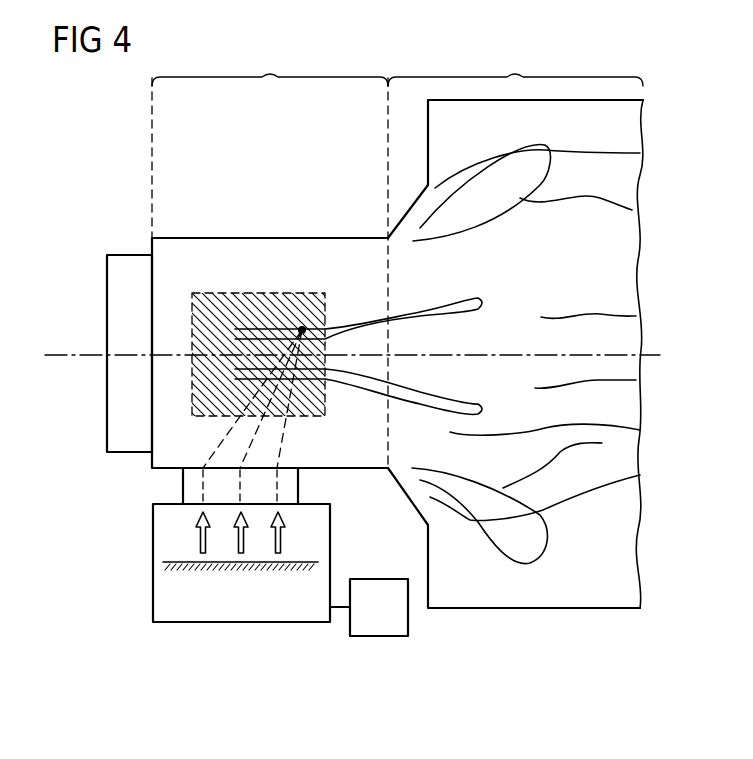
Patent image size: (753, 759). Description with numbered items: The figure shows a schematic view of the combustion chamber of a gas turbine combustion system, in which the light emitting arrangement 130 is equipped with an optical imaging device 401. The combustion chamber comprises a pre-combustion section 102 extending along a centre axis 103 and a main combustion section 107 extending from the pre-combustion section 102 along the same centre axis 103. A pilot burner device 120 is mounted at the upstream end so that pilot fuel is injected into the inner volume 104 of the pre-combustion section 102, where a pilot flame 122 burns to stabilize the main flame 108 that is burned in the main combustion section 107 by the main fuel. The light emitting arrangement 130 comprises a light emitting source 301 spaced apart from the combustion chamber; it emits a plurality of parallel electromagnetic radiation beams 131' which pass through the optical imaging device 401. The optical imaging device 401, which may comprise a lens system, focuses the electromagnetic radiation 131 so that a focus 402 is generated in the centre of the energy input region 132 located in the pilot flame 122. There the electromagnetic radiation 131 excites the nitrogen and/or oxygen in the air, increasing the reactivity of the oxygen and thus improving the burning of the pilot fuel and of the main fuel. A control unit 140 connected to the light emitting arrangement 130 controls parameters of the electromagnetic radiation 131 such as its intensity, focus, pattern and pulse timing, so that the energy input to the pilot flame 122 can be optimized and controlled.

The pre-combustion section 102 is at (270, 255).
The main combustion section 107 is at (515, 325).
The main flame 108 is at (541, 165).
The pilot burner device 120 is at (125, 267).
The focus 402 is at (300, 326).
The energy input region 132 is at (325, 310).
The pilot flame 122 is at (465, 303).
The centre axis 103 is at (90, 353).
The inner volume 104 is at (378, 417).
The electromagnetic radiation 131 is at (151, 487).
The optical imaging device 401 is at (192, 487).
The parallel electromagnetic radiation beams 131' is at (325, 514).
The control unit 140 is at (378, 578).
The light emitting source 301 is at (152, 563).
The light emitting arrangement 130 is at (130, 615).